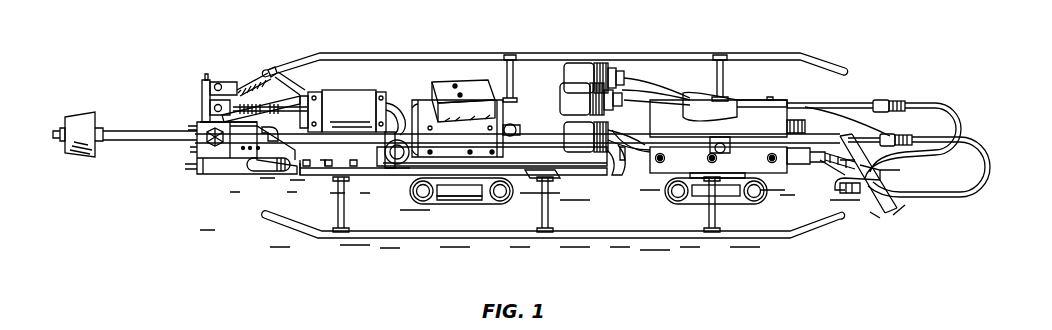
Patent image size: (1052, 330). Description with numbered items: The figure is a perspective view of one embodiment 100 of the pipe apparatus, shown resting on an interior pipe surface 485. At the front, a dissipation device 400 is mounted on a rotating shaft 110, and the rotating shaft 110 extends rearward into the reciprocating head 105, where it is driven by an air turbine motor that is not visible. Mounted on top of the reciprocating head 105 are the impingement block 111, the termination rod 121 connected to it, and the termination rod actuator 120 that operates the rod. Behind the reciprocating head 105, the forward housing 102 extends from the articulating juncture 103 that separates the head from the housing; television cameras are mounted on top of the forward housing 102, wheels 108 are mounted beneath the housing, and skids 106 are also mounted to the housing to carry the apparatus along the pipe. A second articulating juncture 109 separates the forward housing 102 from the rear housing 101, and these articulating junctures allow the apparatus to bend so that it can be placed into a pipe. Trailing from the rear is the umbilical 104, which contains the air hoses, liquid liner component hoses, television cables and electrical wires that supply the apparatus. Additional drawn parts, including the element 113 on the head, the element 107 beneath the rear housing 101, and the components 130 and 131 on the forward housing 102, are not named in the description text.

The embodiment of the apparatus 100 is at (200, 229).
The rear housing 101 is at (763, 167).
The forward housing 102 is at (578, 173).
The articulating juncture 103 is at (397, 163).
The umbilical 104 is at (890, 208).
The reciprocating head 105 is at (313, 167).
The skids 106 is at (650, 233).
The rear slide 107 is at (687, 200).
The wheels 108 is at (450, 203).
The articulating juncture 109 is at (616, 166).
The rotating shaft 110 is at (130, 128).
The impingement block 111 is at (203, 110).
The chuck housing 113 is at (215, 167).
The termination rod actuator 120 is at (352, 93).
The termination rod 121 is at (270, 72).
The control box 130 is at (470, 83).
The solenoid valves 131 is at (582, 70).
The dissipation device 400 is at (73, 157).
The interior pipe surface 485 is at (507, 271).